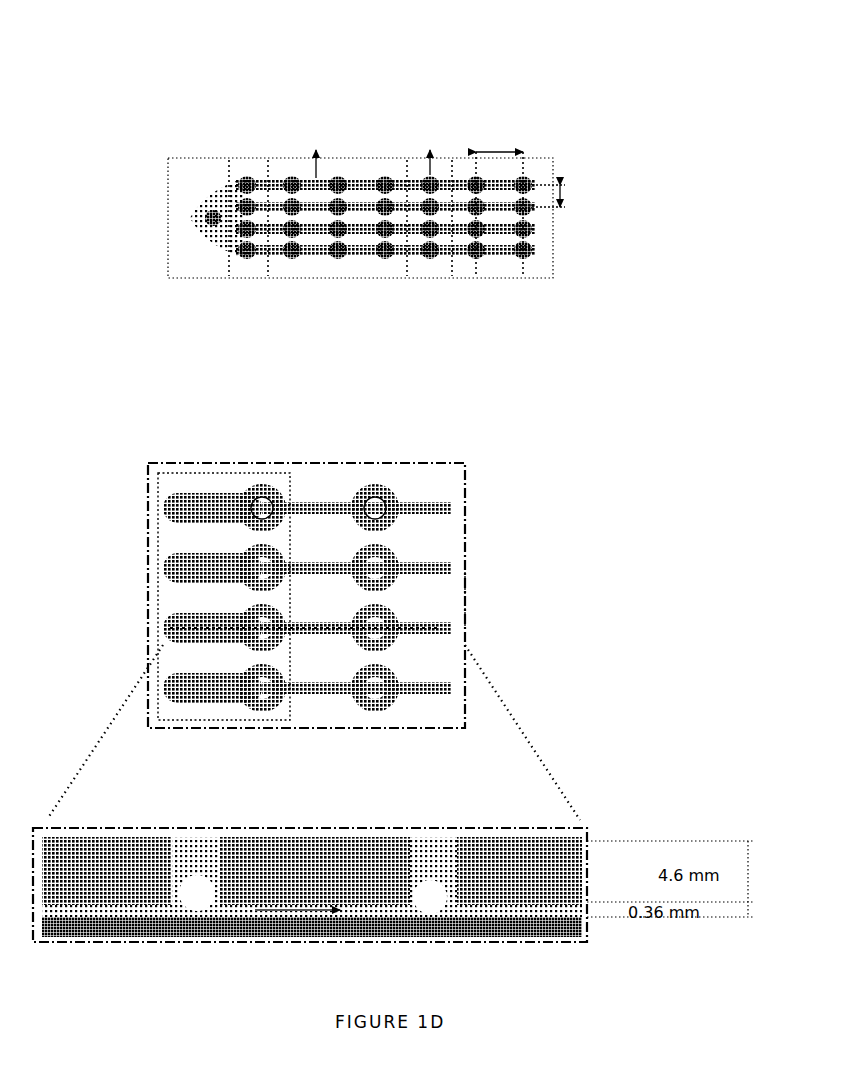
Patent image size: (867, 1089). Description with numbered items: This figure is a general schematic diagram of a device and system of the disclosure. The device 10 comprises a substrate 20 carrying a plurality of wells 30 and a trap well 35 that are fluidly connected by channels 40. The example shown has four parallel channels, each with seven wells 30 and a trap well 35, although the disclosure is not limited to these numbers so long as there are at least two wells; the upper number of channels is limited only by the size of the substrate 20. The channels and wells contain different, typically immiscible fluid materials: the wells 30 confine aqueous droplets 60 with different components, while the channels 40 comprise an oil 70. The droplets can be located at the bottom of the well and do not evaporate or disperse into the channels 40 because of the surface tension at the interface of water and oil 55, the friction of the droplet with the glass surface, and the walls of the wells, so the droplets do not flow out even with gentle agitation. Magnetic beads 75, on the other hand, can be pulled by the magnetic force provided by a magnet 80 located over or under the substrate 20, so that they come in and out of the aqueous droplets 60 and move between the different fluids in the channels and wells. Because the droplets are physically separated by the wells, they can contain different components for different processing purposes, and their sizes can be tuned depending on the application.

The device 10 is at (158, 143).
The substrate 20 is at (548, 255).
The wells 30 is at (523, 255).
The trap well 35 is at (211, 222).
The channels 40 is at (362, 258).
The interface of water and oil 55 is at (418, 880).
The aqueous droplets 60 is at (262, 508).
The oil 70 is at (440, 505).
The magnetic beads 75 is at (292, 690).
The magnet 80 is at (158, 538).